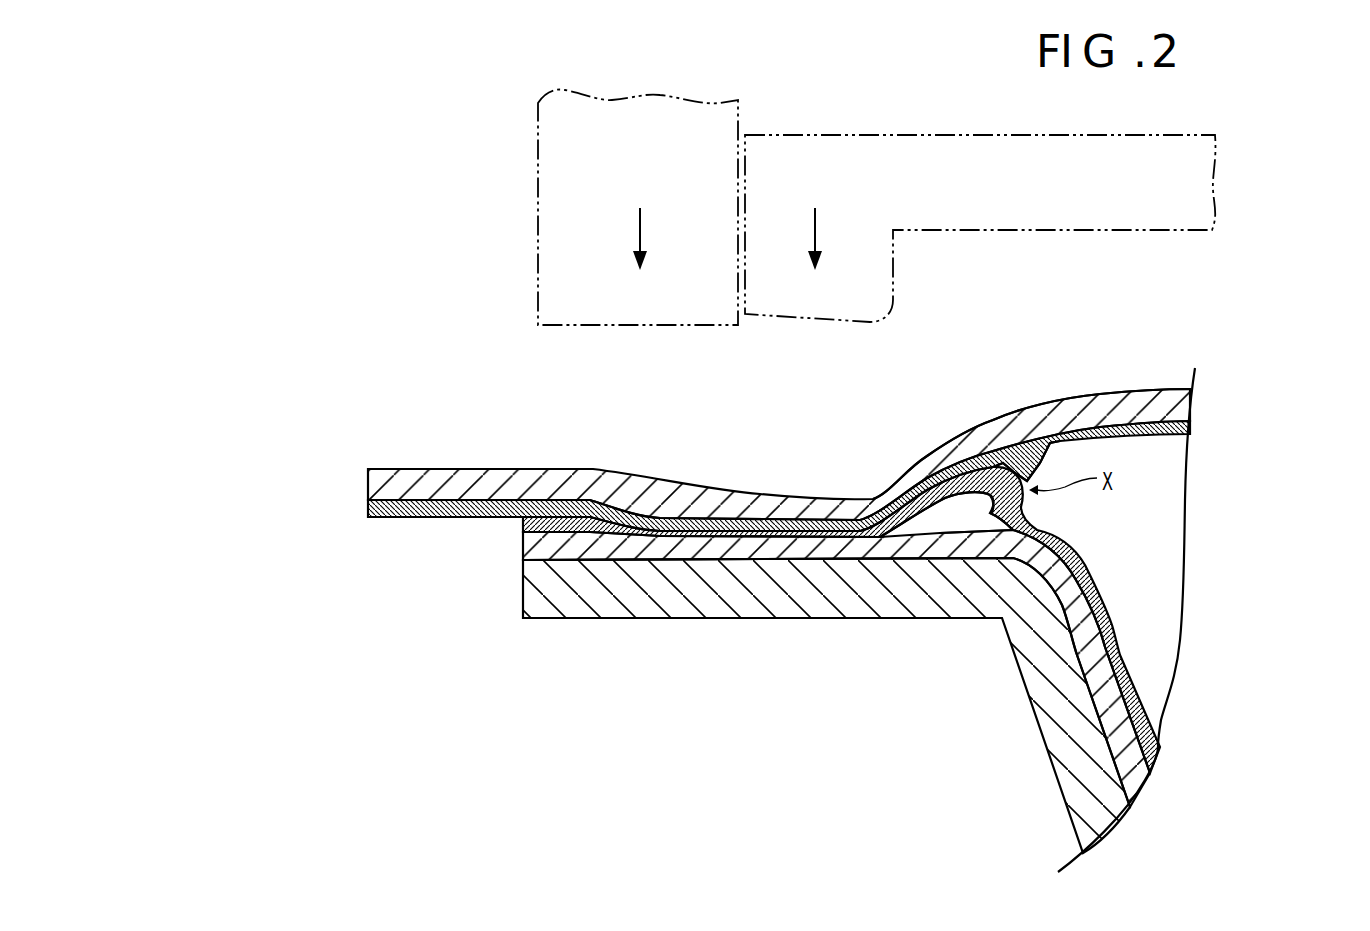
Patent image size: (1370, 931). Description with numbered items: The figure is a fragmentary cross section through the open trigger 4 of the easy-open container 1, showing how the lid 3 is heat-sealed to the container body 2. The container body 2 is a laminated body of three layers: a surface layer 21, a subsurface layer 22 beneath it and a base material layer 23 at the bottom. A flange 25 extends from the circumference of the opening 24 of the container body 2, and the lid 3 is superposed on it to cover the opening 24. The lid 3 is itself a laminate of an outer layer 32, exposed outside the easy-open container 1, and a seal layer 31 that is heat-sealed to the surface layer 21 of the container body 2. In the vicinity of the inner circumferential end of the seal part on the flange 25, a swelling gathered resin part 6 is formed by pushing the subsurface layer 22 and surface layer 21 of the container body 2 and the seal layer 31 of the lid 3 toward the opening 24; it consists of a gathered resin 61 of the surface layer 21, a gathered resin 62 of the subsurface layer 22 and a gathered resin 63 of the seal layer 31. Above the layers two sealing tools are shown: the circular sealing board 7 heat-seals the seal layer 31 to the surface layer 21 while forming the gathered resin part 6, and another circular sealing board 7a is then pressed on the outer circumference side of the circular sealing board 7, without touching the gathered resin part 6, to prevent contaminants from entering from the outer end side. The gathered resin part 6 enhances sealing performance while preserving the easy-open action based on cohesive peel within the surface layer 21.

The easy-open container 1 is at (283, 483).
The container body 2 is at (321, 553).
The surface layer 21 is at (523, 525).
The subsurface layer 22 is at (523, 546).
The base material layer 23 is at (530, 592).
The opening 24 is at (1168, 598).
The flange 25 is at (746, 550).
The lid 3 is at (317, 470).
The seal layer 31 is at (372, 507).
The outer layer 32 is at (372, 488).
The open trigger 4 is at (929, 405).
The gathered resin part 6 is at (1289, 460).
The gathered resin of the surface layer 61 is at (977, 510).
The gathered resin of the subsurface layer 62 is at (972, 531).
The gathered resin of the seal layer 63 is at (1047, 458).
The circular sealing board 7 is at (843, 152).
The circular sealing board 7a is at (546, 208).